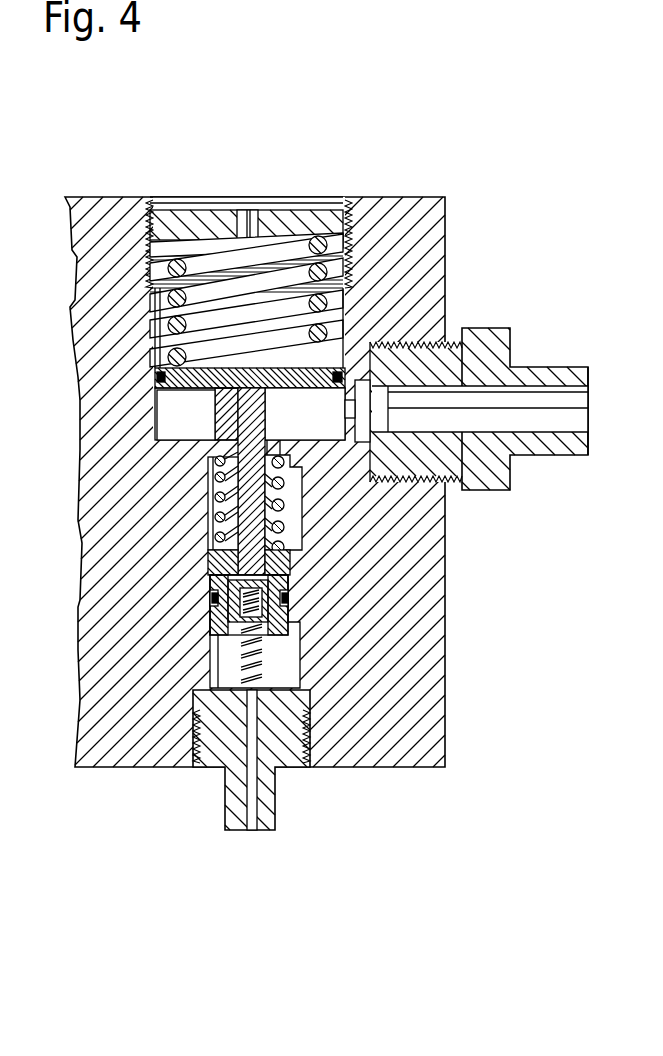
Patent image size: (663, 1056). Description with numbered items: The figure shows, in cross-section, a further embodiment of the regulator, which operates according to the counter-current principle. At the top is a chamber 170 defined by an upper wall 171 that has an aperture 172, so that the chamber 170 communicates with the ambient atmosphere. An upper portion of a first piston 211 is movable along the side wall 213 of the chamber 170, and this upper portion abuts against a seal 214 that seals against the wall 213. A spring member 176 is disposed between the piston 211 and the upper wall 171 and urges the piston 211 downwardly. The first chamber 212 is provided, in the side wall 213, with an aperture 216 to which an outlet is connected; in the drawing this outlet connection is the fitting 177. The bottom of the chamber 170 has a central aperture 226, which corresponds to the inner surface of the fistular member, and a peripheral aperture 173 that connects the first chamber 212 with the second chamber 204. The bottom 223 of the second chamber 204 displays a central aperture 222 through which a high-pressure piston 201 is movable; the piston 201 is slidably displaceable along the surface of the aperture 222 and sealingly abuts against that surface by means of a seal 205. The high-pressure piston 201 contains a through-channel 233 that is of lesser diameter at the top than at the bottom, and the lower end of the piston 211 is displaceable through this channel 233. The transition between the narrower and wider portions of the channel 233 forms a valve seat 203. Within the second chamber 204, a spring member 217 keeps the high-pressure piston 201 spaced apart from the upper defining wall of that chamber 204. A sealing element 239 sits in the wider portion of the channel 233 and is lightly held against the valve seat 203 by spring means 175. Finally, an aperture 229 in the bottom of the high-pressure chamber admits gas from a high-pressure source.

The chamber 170 is at (193, 243).
The upper wall 171 is at (217, 220).
The aperture 172 is at (255, 222).
The peripheral aperture 173 is at (281, 438).
The spring means 175 is at (243, 668).
The spring member 176 is at (160, 330).
The fitting 177 is at (574, 368).
The high-pressure piston 201 is at (290, 592).
The valve seat 203 is at (210, 578).
The second chamber 204 is at (298, 510).
The seal 205 is at (270, 603).
The first piston 211 is at (247, 425).
The first chamber 212 is at (170, 410).
The side wall 213 is at (345, 302).
The seal 214 is at (155, 376).
The aperture 216 is at (348, 415).
The spring member 217 is at (212, 495).
The central aperture 222 is at (300, 625).
The bottom 223 is at (296, 572).
The central aperture 226 is at (235, 440).
The aperture 229 is at (250, 827).
The through-channel 233 is at (212, 567).
The sealing element 239 is at (238, 604).